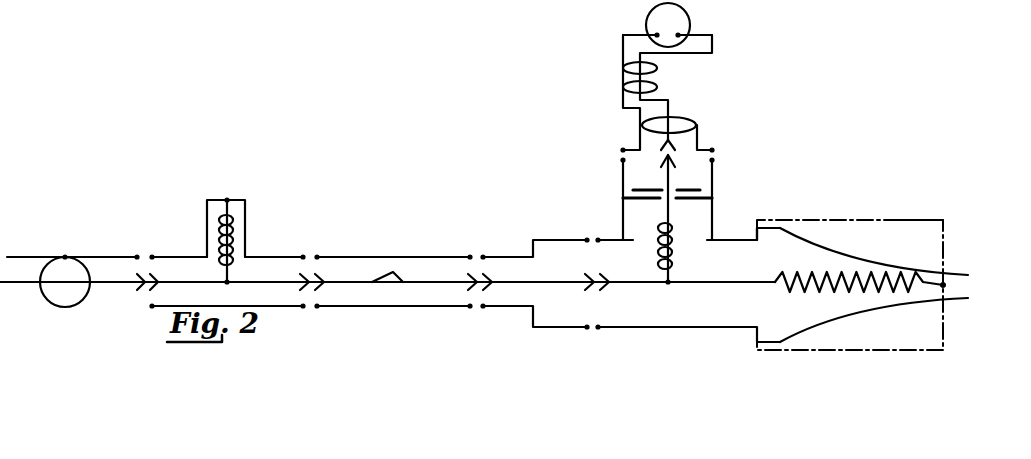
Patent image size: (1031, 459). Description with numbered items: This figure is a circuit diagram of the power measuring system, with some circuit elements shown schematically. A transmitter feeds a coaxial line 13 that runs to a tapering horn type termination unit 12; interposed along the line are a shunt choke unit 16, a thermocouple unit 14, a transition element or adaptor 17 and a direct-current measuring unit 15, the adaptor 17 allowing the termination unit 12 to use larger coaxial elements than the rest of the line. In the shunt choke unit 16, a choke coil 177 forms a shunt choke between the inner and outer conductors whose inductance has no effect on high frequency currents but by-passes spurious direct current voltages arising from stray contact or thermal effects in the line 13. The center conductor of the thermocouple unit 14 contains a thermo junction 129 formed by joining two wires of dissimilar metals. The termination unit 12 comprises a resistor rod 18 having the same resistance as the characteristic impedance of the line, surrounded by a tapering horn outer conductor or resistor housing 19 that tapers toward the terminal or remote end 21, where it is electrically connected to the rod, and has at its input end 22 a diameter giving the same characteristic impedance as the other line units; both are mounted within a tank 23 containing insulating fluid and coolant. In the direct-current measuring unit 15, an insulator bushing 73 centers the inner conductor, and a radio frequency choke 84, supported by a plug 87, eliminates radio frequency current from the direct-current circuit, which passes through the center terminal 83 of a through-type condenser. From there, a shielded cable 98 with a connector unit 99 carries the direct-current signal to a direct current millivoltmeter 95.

The termination unit 12 is at (869, 213).
The coaxial line 13 is at (65, 256).
The thermocouple unit 14 is at (344, 268).
The direct-current measuring unit 15 is at (617, 250).
The shunt choke unit 16 is at (181, 264).
The transition element or adaptor 17 is at (518, 264).
The resistor rod 18 is at (777, 290).
The tapering horn outer conductor or resistor housing 19 is at (818, 247).
The terminal or remote end 21 is at (943, 285).
The input end 22 is at (778, 230).
The tank 23 is at (919, 221).
The insulator bushing 73 is at (639, 200).
The center terminal 83 is at (694, 182).
The radio frequency choke 84 is at (676, 244).
The plug 87 is at (642, 182).
The direct current millivoltmeter 95 is at (648, 19).
The shielded cable 98 is at (623, 70).
The connector unit 99 is at (623, 148).
The thermo junction 129 is at (384, 277).
The choke coil 177 is at (237, 233).